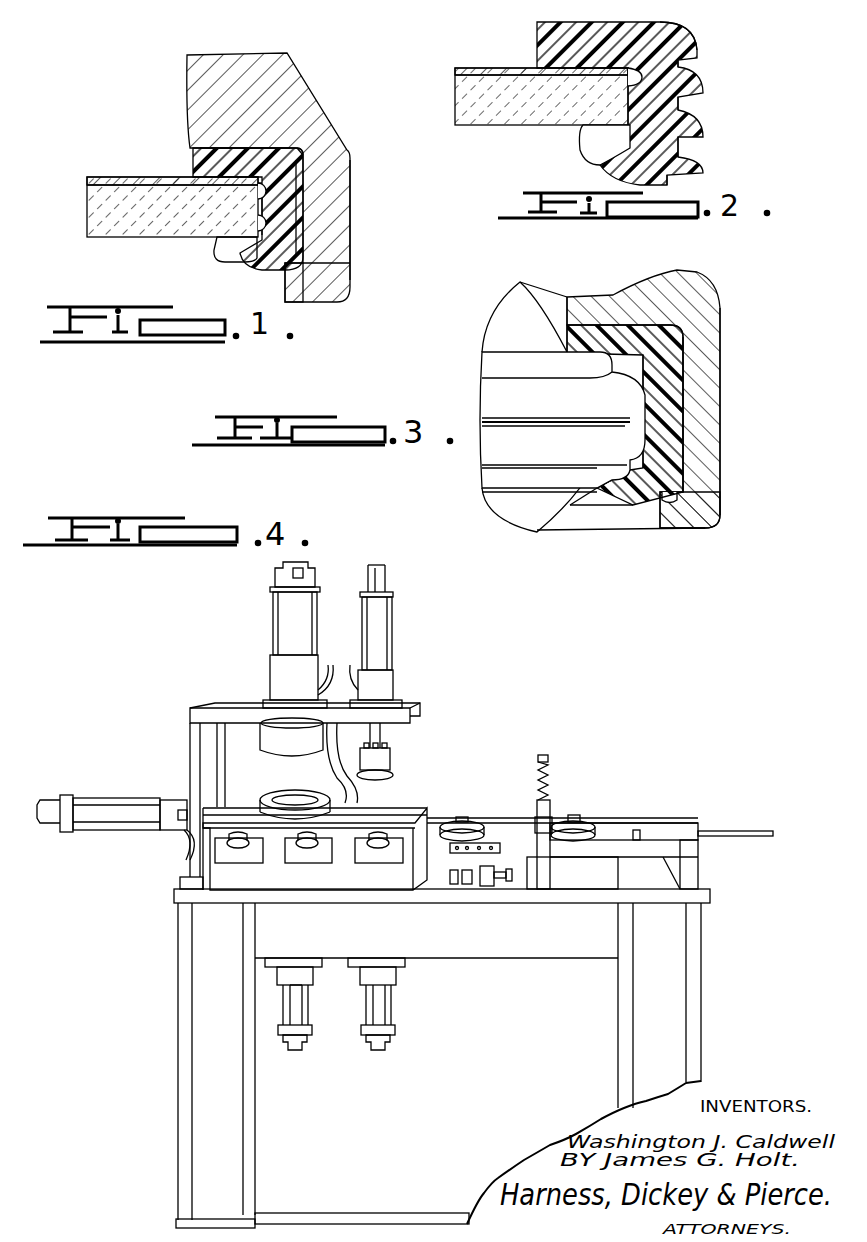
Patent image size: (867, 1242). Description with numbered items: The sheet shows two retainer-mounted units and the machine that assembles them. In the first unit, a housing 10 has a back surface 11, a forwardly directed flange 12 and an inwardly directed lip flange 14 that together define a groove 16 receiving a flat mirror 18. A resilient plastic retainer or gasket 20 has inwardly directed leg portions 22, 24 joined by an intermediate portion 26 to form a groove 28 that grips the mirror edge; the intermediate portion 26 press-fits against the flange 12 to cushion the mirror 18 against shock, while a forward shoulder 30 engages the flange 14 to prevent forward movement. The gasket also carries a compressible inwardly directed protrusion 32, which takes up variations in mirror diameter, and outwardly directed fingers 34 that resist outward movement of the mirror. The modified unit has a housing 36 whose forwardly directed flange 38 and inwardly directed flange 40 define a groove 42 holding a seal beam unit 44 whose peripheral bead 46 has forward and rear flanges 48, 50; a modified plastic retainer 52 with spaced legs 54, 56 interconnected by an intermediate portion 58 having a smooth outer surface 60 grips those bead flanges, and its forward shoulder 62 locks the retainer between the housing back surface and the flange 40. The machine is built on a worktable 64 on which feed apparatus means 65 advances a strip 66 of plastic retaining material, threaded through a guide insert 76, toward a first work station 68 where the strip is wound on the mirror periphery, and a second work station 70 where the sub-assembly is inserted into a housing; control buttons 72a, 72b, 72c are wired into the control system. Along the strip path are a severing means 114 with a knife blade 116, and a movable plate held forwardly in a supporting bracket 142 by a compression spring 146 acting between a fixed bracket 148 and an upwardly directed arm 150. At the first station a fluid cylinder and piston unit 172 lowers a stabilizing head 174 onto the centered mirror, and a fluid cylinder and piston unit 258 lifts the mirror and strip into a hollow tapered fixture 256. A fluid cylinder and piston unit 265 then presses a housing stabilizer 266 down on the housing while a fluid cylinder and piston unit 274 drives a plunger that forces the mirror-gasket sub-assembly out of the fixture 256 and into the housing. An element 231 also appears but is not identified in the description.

In FIG. 1, the housing 10 is at (318, 92).
In FIG. 1, the back surface 11 is at (193, 153).
In FIG. 1, the forwardly directed flange 12 is at (340, 223).
In FIG. 1, the inwardly directed flange 14 is at (298, 273).
In FIG. 1, the groove 16 is at (300, 203).
In FIG. 1, the flat mirror 18 is at (120, 223).
In FIG. 2, the flat mirror 18 is at (483, 107).
In FIG. 1, the plastic retainer element or gasket 20 is at (307, 167).
In FIG. 2, the plastic retainer element or gasket 20 is at (690, 32).
In FIG. 1, the leg portion 22 is at (245, 124).
In FIG. 2, the leg portion 22 is at (547, 32).
In FIG. 1, the leg portion 24 is at (222, 245).
In FIG. 2, the leg portion 24 is at (587, 147).
In FIG. 1, the intermediate portion 26 is at (273, 203).
In FIG. 2, the intermediate portion 26 is at (670, 107).
In FIG. 1, the groove 28 is at (247, 237).
In FIG. 2, the groove 28 is at (637, 78).
In FIG. 1, the forward shoulder 30 is at (303, 267).
In FIG. 2, the forward shoulder 30 is at (675, 177).
In FIG. 1, the radially inwardly directed protrusion 32 is at (255, 207).
In FIG. 2, the radially inwardly directed protrusion 32 is at (620, 105).
In FIG. 2, the radially outwardly directed fingers 34 is at (697, 48).
In FIG. 3, the housing 36 is at (735, 350).
In FIG. 3, the forwardly directed flange 38 is at (703, 435).
In FIG. 3, the inwardly directed flange 40 is at (677, 517).
In FIG. 3, the groove 42 is at (670, 383).
In FIG. 3, the seal beam unit 44 is at (533, 530).
In FIG. 3, the peripheral bead 46 is at (512, 445).
In FIG. 3, the forward flange 48 is at (500, 480).
In FIG. 3, the rear flange 50 is at (510, 350).
In FIG. 3, the modified plastic retainer 52 is at (680, 418).
In FIG. 3, the leg 54 is at (588, 335).
In FIG. 3, the leg 56 is at (607, 493).
In FIG. 3, the intermediate portion 58 is at (633, 427).
In FIG. 3, the smooth outer surface 60 is at (683, 347).
In FIG. 3, the forward shoulder 62 is at (680, 503).
In FIG. 4, the worktable 64 is at (174, 960).
In FIG. 4, the feed apparatus means 65 is at (535, 800).
In FIG. 4, the strip of plastic retaining material 66 is at (737, 830).
In FIG. 4, the first work station 68 is at (398, 794).
In FIG. 4, the second work station 70 is at (258, 790).
In FIG. 4, the control button 72a is at (238, 848).
In FIG. 4, the control button 72b is at (307, 848).
In FIG. 4, the control button 72c is at (378, 848).
In FIG. 4, the guide insert 76 is at (665, 830).
In FIG. 4, the severing means 114 is at (555, 795).
In FIG. 4, the knife blade 116 is at (548, 820).
In FIG. 4, the supporting bracket 142 is at (527, 870).
In FIG. 4, the compression spring 146 is at (468, 886).
In FIG. 4, the fixed bracket 148 is at (485, 887).
In FIG. 4, the upwardly directed arm 150 is at (455, 886).
In FIG. 4, the fluid cylinder and piston unit 172 is at (403, 678).
In FIG. 4, the stabilizing head 174 is at (393, 753).
In FIG. 4, the feed cylinder 231 is at (131, 797).
In FIG. 4, the special fixture means 256 is at (313, 790).
In FIG. 4, the fluid cylinder and piston unit 258 is at (396, 1001).
In FIG. 4, the fluid cylinder and piston unit 265 is at (262, 670).
In FIG. 4, the housing stabilizer 266 is at (291, 737).
In FIG. 4, the fluid cylinder and piston unit 274 is at (313, 1013).